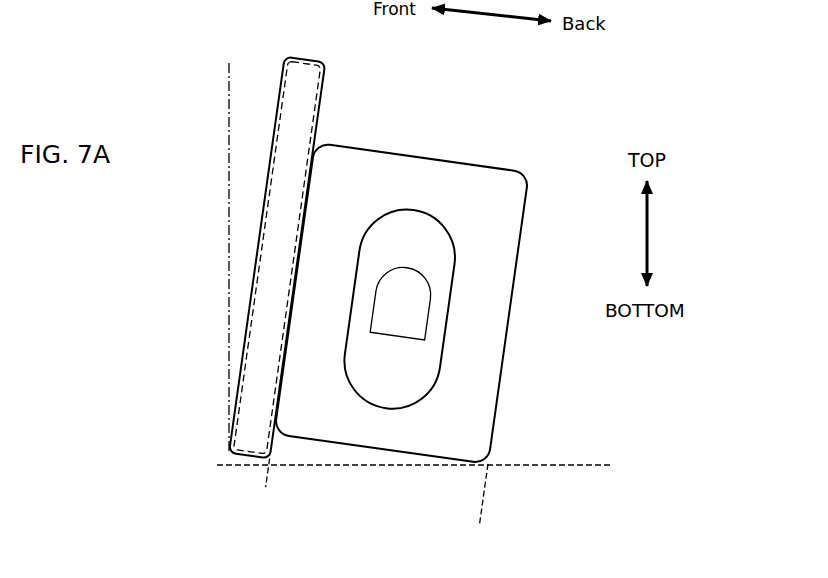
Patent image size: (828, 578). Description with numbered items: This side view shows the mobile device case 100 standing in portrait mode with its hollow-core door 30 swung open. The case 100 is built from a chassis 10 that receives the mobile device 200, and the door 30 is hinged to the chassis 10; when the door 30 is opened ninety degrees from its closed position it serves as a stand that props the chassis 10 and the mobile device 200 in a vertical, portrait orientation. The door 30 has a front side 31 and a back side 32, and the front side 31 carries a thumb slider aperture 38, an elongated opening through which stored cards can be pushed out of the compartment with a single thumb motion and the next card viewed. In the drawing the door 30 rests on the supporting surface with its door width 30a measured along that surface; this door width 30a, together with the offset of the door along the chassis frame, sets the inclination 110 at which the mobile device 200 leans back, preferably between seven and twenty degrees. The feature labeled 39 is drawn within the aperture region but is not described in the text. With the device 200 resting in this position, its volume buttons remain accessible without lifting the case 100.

The mobile device case 100 is at (81, 23).
The inclination 110 is at (284, 57).
The chassis 10 is at (325, 98).
The mobile device 200 is at (248, 373).
The hollow-core door 30 is at (451, 160).
The front side 31 is at (342, 205).
The back side 32 is at (402, 291).
The recess wall 39 is at (425, 298).
The thumb slider aperture 38 is at (443, 351).
The door width 30a is at (478, 504).